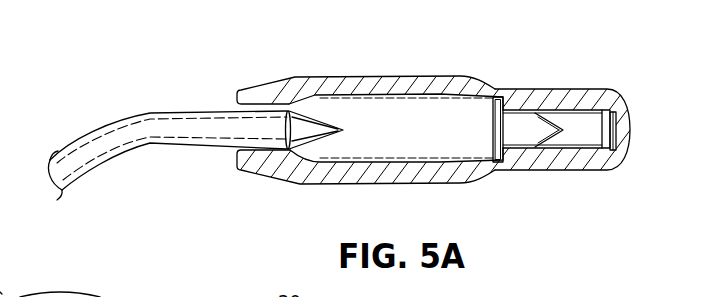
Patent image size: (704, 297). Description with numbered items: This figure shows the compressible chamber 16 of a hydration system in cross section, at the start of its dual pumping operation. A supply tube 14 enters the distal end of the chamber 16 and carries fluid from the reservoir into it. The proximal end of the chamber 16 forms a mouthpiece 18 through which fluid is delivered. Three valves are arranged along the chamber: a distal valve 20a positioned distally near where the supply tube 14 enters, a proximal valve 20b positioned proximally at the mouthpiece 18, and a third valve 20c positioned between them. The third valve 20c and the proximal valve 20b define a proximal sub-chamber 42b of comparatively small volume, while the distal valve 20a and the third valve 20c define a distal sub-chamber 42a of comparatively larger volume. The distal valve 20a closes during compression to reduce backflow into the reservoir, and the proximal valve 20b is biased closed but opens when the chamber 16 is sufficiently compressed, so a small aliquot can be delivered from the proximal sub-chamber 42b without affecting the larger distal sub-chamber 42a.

The supply tube 14 is at (145, 296).
The compressible chamber 16 is at (357, 75).
The mouthpiece 18 is at (532, 89).
The distal sub-chamber 42a is at (413, 110).
The proximal sub-chamber 42b is at (593, 118).
The distal valve 20a is at (292, 150).
The proximal valve 20b is at (617, 130).
The third valve 20c is at (527, 142).